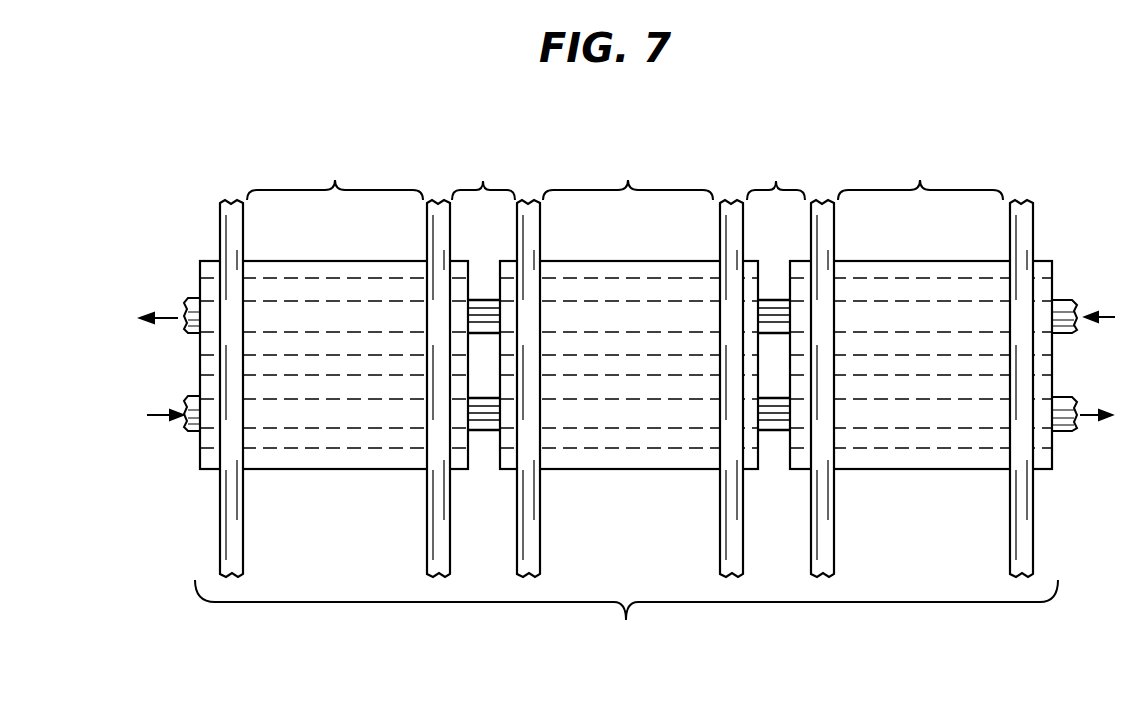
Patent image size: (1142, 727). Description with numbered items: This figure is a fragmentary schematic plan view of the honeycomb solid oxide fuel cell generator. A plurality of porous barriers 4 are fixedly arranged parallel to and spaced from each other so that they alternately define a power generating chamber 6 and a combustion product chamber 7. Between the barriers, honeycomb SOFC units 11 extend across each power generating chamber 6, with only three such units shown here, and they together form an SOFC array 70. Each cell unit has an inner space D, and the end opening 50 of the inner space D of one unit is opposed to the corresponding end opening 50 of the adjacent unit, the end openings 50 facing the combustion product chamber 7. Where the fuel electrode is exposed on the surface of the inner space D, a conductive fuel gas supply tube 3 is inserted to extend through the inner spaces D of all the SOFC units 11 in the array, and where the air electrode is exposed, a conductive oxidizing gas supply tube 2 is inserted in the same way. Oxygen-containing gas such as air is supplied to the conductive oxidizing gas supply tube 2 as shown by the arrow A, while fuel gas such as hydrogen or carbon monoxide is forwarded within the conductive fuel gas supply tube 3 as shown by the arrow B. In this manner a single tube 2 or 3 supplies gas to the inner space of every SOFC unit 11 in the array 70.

The conductive oxidizing gas supply tube 2 is at (190, 431).
The conductive fuel gas supply tube 3 is at (188, 297).
The porous barrier 4 is at (233, 205).
The power generating chamber 6 is at (625, 176).
The combustion product chamber 7 is at (628, 176).
The honeycomb SOFC unit 11 is at (297, 261).
The end opening 50 is at (478, 264).
The SOFC array 70 is at (626, 620).
The arrow A is at (157, 415).
The arrow B is at (1100, 316).
The inner space D is at (322, 287).